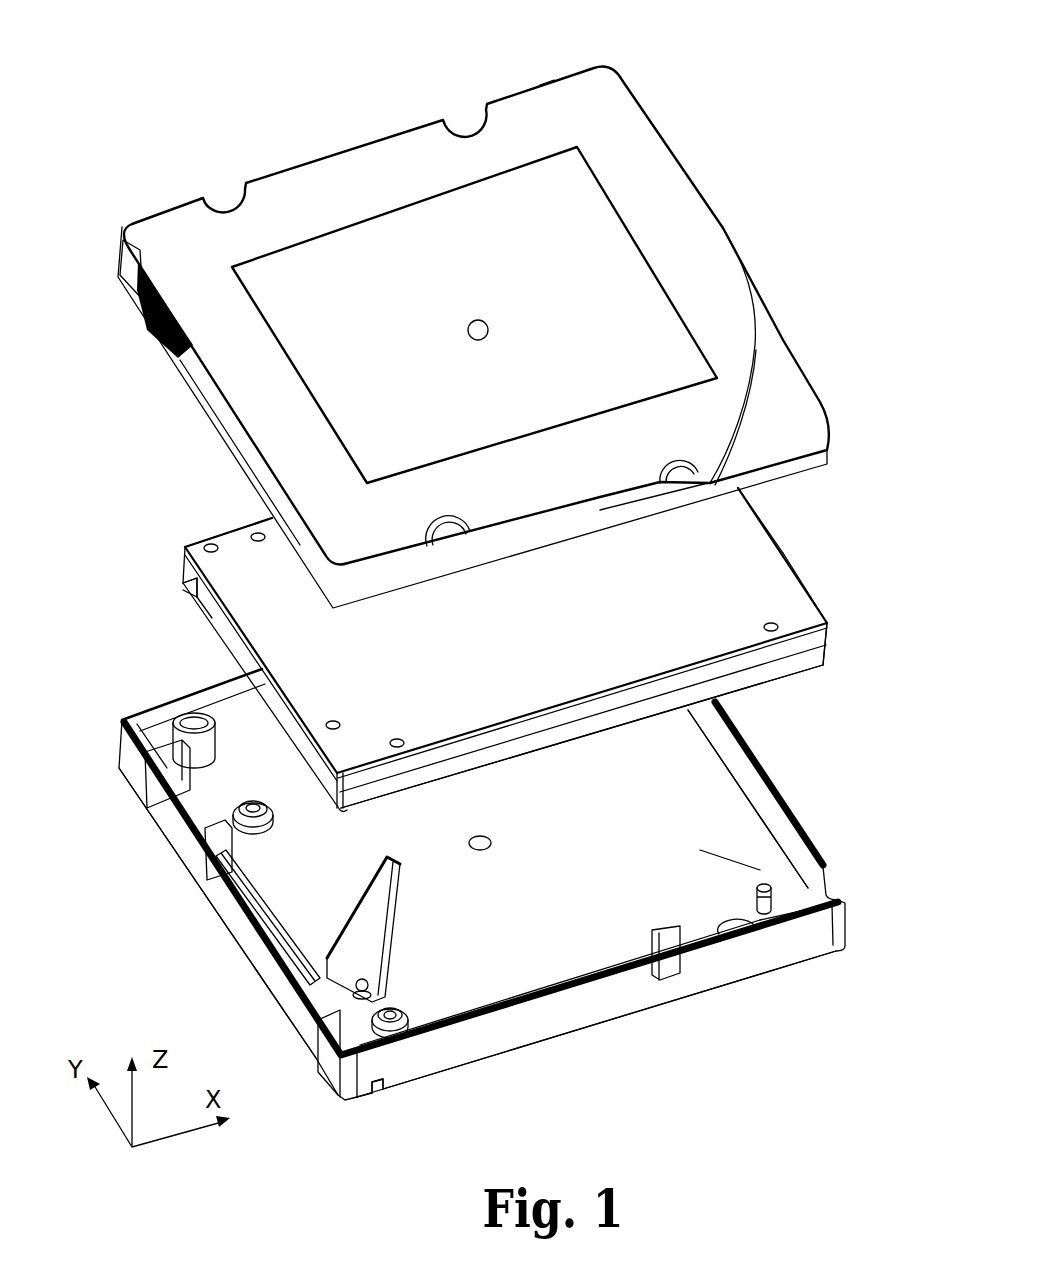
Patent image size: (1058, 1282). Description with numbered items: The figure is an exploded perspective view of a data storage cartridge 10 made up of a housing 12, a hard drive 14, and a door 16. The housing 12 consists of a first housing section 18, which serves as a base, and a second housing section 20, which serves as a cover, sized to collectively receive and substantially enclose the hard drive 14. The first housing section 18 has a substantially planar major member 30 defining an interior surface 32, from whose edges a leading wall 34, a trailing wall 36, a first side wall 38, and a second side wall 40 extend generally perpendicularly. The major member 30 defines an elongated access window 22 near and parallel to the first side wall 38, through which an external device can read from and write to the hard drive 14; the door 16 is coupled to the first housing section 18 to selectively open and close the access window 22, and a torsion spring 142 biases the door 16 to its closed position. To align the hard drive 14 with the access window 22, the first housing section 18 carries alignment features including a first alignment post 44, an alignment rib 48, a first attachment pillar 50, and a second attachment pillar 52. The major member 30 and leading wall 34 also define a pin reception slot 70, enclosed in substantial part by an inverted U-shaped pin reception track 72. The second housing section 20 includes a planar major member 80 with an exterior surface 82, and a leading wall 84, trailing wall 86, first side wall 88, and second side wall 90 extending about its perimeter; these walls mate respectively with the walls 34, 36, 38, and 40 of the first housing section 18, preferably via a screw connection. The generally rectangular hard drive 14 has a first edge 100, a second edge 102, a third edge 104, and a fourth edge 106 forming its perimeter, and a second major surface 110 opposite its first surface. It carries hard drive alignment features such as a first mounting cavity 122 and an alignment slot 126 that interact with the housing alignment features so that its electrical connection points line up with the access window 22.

The data storage cartridge 10 is at (847, 209).
The housing 12 is at (825, 820).
The hard drive 14 is at (775, 583).
The door 16 is at (389, 923).
The first housing section 18 is at (775, 771).
The second housing section 20 is at (793, 403).
The access window 22 is at (262, 937).
The major member 30 is at (697, 772).
The interior surface 32 is at (752, 860).
The leading wall 34 is at (590, 1010).
The trailing wall 36 is at (222, 700).
The first side wall 38 is at (207, 880).
The second side wall 40 is at (778, 800).
The first alignment post 44 is at (780, 915).
The alignment rib 48 is at (207, 833).
The first attachment pillar 50 is at (416, 1038).
The second attachment pillar 52 is at (235, 808).
The pin reception slot 70 is at (382, 1083).
The pin reception track 72 is at (315, 1045).
The major member 80 is at (648, 158).
The exterior surface 82 is at (692, 213).
The leading wall 84 is at (683, 493).
The trailing wall 86 is at (551, 75).
The first side wall 88 is at (237, 443).
The second side wall 90 is at (725, 228).
The first edge 100 is at (773, 665).
The second edge 102 is at (205, 620).
The third edge 104 is at (228, 528).
The fourth edge 106 is at (783, 550).
The second major surface 110 is at (810, 611).
The first mounting cavity 122 is at (830, 633).
The alignment slot 126 is at (198, 597).
The torsion spring 142 is at (372, 990).